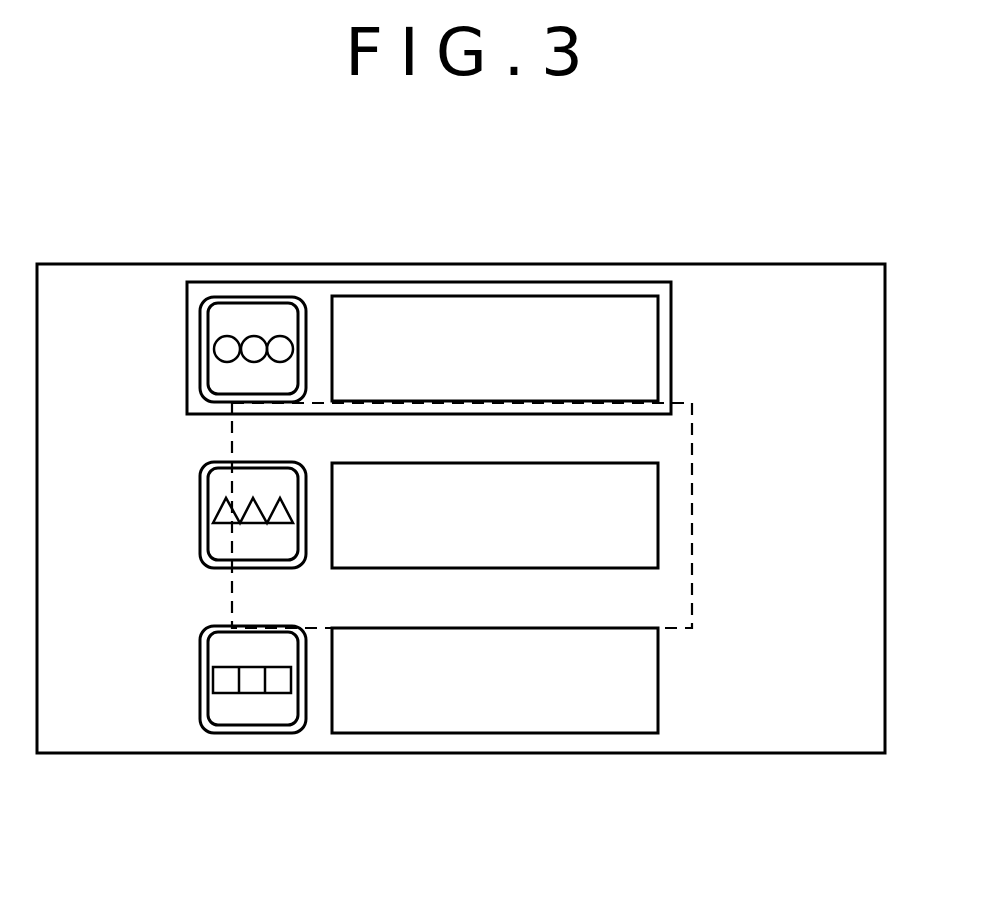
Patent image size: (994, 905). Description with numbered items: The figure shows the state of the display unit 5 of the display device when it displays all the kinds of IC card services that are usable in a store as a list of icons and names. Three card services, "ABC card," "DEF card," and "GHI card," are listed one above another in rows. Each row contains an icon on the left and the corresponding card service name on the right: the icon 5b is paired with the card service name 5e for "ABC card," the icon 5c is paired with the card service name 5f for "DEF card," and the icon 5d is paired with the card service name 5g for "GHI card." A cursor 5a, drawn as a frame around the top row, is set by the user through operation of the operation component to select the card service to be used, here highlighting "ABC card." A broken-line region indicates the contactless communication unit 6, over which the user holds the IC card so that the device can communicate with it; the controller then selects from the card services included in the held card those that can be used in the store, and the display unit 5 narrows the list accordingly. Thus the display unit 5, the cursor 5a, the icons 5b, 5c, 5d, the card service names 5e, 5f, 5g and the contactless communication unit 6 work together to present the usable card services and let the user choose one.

The display unit 5 is at (489, 258).
The cursor 5a is at (260, 282).
The icon 5b is at (220, 320).
The icon 5c is at (220, 488).
The icon 5d is at (220, 649).
The card service name 5e is at (638, 322).
The card service name 5f is at (643, 517).
The card service name 5g is at (643, 683).
The contactless communication unit 6 is at (692, 455).